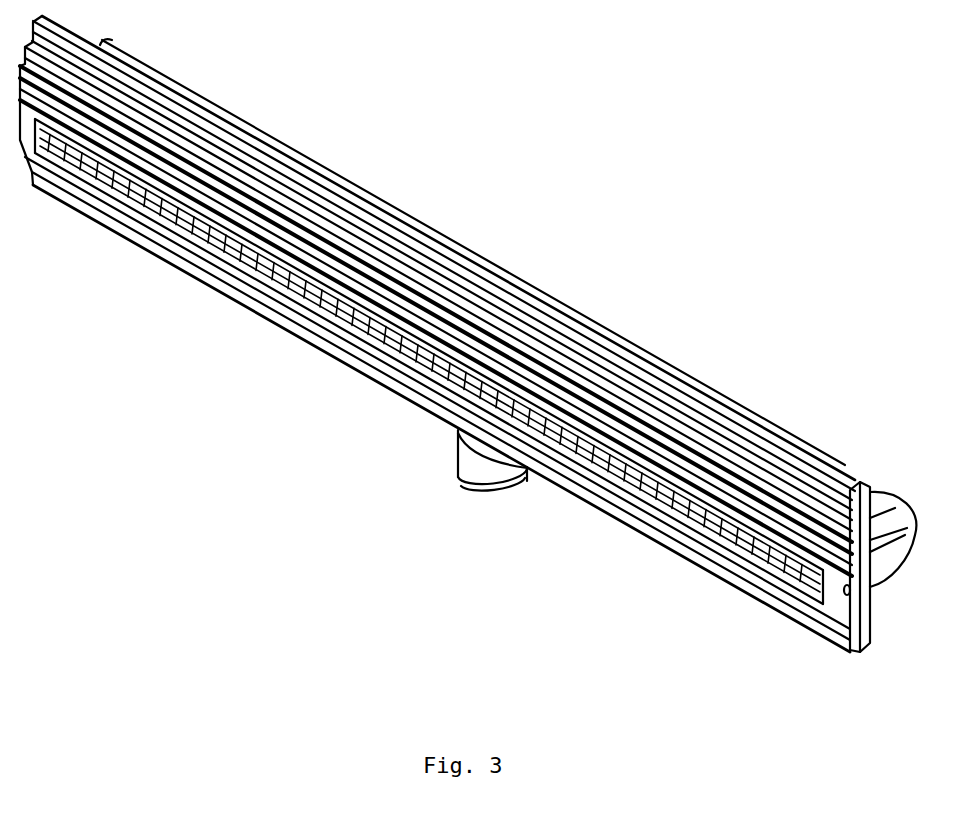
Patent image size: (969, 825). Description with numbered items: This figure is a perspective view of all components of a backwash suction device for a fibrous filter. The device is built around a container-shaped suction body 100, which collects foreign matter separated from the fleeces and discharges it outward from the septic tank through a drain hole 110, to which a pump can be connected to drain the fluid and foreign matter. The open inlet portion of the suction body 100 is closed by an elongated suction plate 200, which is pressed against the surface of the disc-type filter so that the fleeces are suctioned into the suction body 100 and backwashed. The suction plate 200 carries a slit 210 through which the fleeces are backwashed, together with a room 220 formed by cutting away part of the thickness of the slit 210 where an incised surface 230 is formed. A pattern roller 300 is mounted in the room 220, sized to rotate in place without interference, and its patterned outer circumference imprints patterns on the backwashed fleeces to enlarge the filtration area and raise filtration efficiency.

The suction body 100 is at (563, 333).
The drain hole 110 is at (495, 487).
The suction plate 200 is at (353, 252).
The slit 210 is at (322, 303).
The room 220 is at (745, 550).
The incised surface 230 is at (118, 198).
The pattern roller 300 is at (726, 492).